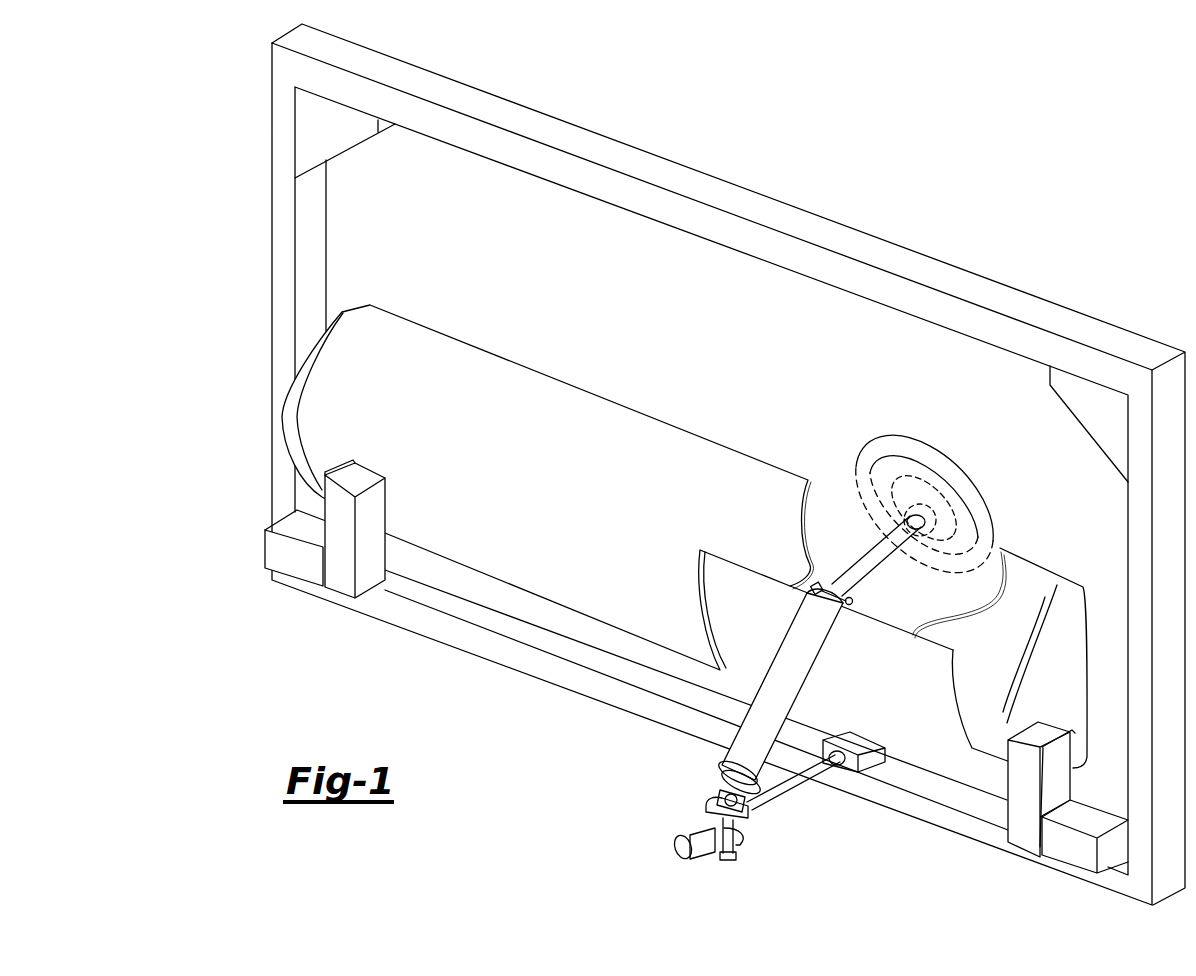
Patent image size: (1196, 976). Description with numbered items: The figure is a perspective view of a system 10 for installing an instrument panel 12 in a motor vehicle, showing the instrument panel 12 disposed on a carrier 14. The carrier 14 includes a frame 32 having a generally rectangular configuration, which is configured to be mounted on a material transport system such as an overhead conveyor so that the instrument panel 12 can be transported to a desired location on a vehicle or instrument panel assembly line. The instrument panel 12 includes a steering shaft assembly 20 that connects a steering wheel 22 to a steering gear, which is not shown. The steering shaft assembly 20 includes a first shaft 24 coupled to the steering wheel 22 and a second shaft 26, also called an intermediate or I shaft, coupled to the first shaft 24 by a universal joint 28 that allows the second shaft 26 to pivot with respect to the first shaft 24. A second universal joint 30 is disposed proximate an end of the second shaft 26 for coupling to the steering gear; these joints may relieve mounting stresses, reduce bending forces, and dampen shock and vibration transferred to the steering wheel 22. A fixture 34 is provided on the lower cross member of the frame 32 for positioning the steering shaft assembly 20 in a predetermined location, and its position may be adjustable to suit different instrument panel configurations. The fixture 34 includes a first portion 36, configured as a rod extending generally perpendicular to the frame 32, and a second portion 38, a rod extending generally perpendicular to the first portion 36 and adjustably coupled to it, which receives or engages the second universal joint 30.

The system 10 is at (695, 473).
The instrument panel 12 is at (684, 524).
The carrier 14 is at (695, 464).
The steering shaft assembly 20 is at (692, 812).
The steering wheel 22 is at (852, 464).
The first shaft 24 is at (845, 568).
The second shaft 26 is at (805, 625).
The universal joint 28 is at (858, 604).
The second universal joint 30 is at (727, 773).
The frame 32 is at (1060, 875).
The fixture 34 is at (872, 817).
The first portion 36 is at (790, 790).
The second portion 38 is at (737, 835).